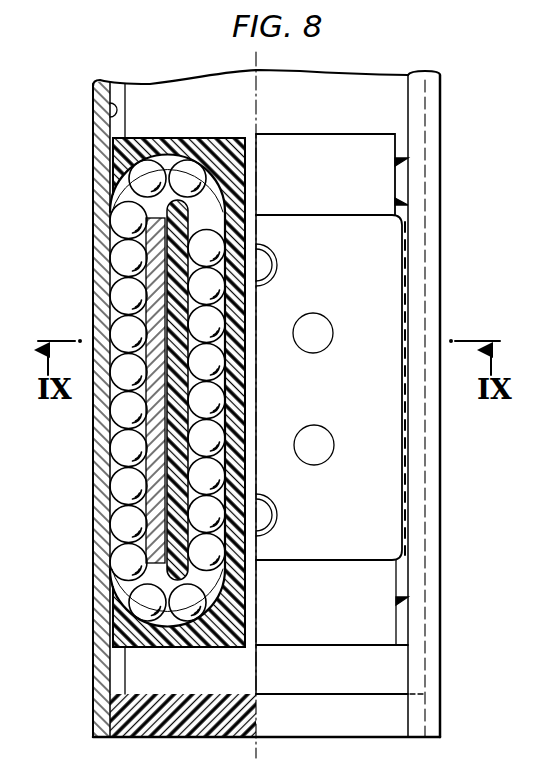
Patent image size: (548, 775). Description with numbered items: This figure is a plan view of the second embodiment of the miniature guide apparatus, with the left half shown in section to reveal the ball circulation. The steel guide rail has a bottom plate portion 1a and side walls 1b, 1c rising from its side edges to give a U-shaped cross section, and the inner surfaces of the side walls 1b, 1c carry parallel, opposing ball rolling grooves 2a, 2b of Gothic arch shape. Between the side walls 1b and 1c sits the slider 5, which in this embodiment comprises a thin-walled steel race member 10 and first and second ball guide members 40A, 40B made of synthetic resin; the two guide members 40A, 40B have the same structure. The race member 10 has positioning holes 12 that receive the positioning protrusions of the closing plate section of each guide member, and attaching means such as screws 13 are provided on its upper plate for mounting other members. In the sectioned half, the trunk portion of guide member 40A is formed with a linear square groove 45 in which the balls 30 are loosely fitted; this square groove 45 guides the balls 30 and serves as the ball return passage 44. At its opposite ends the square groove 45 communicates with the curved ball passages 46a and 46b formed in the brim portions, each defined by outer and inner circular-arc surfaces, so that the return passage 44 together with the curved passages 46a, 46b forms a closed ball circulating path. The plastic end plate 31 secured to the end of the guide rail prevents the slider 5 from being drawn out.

The bottom plate portion 1a is at (205, 95).
The side wall 1b is at (97, 430).
The side wall 1c is at (442, 520).
The ball rolling groove 2a is at (110, 108).
The ball rolling groove 2b is at (410, 160).
The slider 5 is at (385, 268).
The race member 10 is at (385, 430).
The positioning holes 12 is at (322, 330).
The screws 13 is at (264, 262).
The balls 30 is at (112, 212).
The end plate 31 is at (317, 724).
The first ball guide member 40A is at (118, 158).
The second ball guide member 40B is at (383, 190).
The ball return passage 44 is at (150, 266).
The square groove 45 is at (238, 396).
The curved ball passage 46a is at (170, 178).
The curved ball passage 46b is at (165, 618).